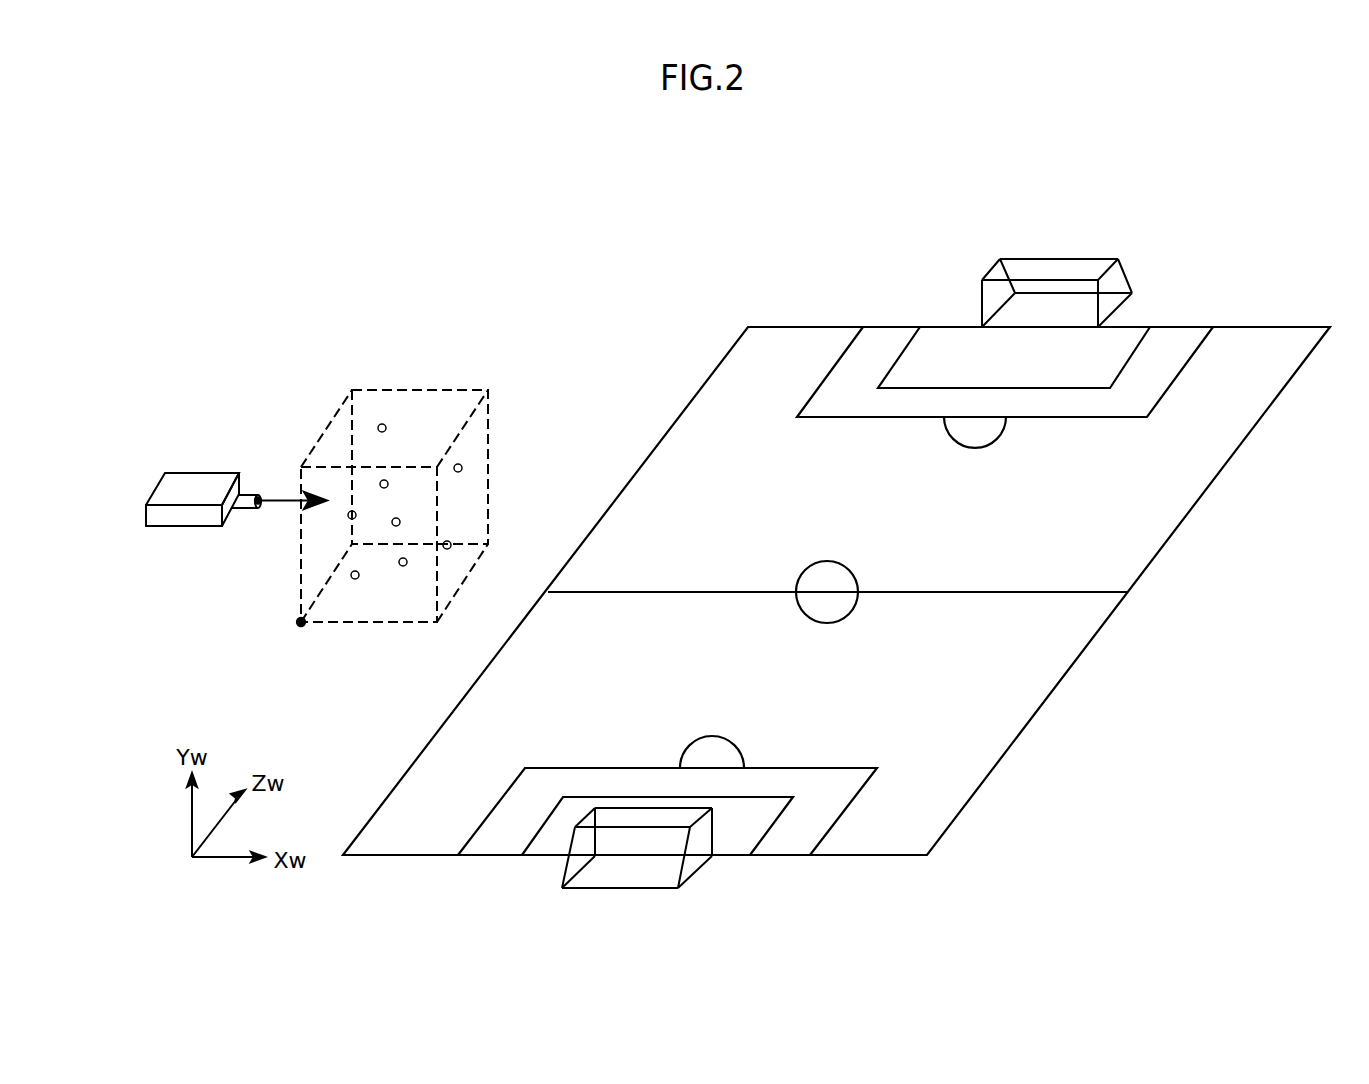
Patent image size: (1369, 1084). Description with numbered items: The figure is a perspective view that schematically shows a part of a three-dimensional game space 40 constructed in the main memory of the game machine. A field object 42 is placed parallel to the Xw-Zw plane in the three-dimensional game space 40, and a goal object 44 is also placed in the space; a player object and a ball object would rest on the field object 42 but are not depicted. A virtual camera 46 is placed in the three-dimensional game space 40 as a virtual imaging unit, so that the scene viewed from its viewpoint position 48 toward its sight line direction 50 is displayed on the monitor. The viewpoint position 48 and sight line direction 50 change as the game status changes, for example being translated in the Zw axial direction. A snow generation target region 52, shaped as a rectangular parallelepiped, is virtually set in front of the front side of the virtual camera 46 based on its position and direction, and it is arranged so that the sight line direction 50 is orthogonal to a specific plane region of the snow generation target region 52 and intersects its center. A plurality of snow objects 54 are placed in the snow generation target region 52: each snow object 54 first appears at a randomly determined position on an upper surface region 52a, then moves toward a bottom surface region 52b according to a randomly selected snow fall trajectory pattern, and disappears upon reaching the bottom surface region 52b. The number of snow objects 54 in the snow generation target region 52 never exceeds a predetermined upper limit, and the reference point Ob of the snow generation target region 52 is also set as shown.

The three-dimensional game space 40 is at (575, 248).
The field object 42 is at (1093, 637).
The goal object 44 is at (1060, 258).
The virtual camera 46 is at (147, 515).
The viewpoint position 48 is at (258, 510).
The sight line direction 50 is at (297, 498).
The snow generation target region 52 is at (432, 495).
The upper surface region 52a is at (418, 412).
The bottom surface region 52b is at (387, 598).
The snow object 54 is at (465, 471).